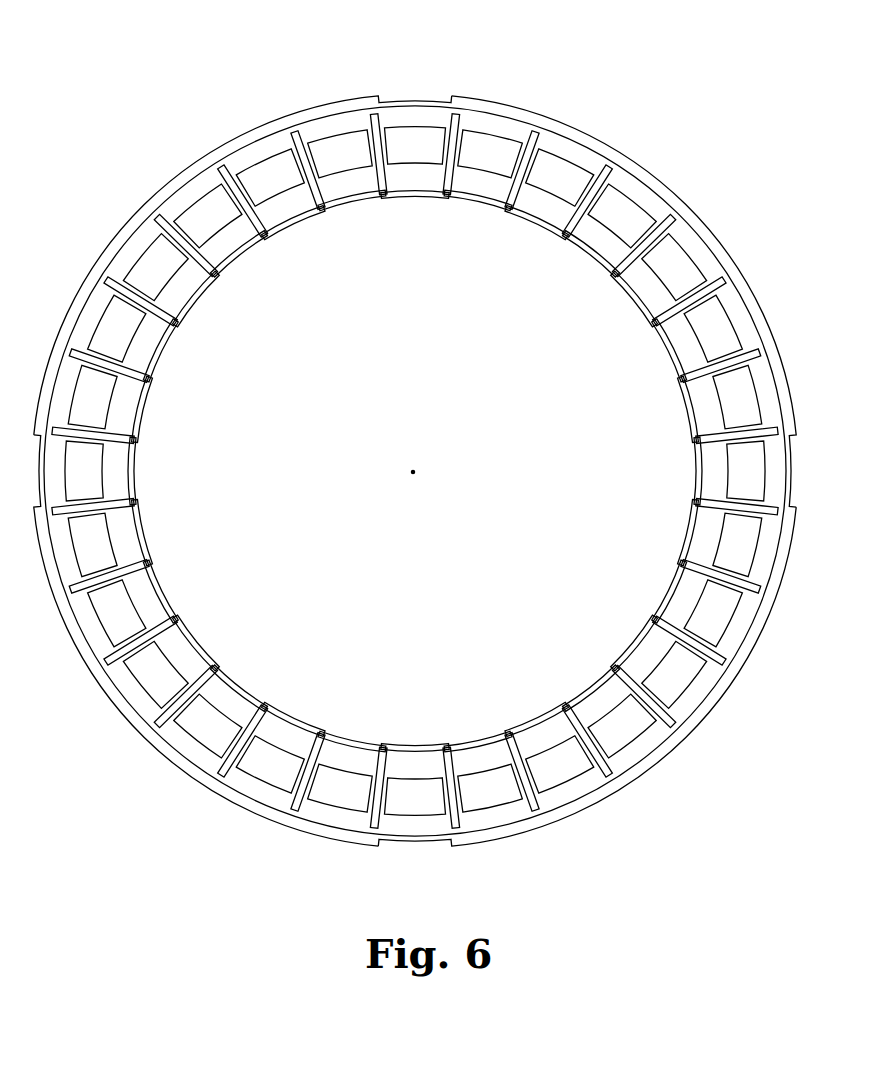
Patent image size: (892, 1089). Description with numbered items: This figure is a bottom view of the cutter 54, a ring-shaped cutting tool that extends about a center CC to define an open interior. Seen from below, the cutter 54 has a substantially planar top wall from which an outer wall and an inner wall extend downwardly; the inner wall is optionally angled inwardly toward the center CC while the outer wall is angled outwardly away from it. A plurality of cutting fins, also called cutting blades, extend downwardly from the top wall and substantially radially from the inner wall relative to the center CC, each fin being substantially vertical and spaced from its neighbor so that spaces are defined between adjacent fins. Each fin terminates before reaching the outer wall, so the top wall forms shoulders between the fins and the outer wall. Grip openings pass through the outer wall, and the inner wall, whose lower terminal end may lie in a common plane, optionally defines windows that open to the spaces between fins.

The cutter 54 is at (213, 98).
The center CC is at (413, 472).